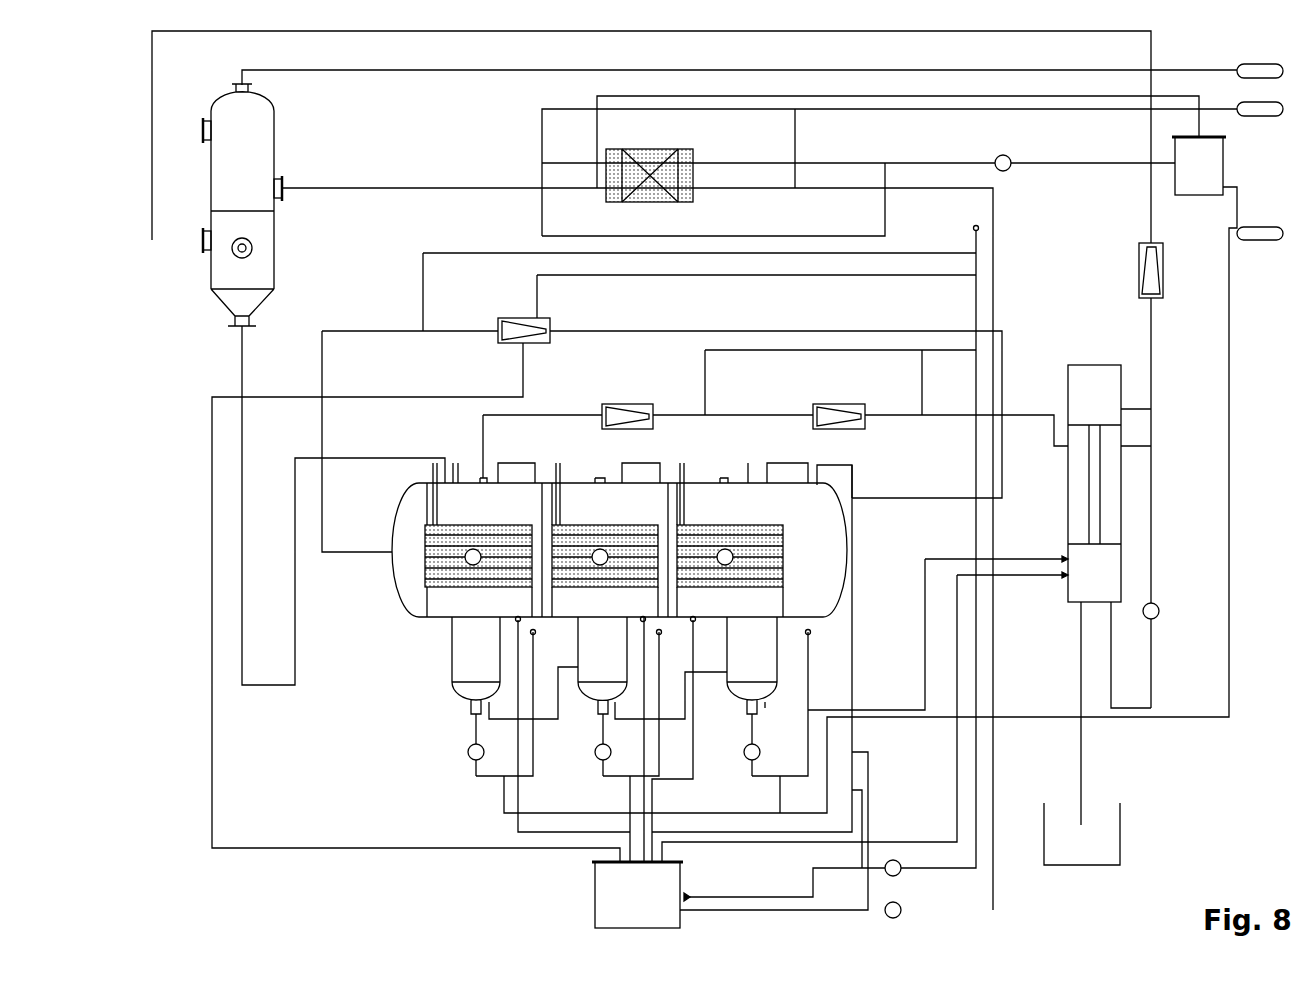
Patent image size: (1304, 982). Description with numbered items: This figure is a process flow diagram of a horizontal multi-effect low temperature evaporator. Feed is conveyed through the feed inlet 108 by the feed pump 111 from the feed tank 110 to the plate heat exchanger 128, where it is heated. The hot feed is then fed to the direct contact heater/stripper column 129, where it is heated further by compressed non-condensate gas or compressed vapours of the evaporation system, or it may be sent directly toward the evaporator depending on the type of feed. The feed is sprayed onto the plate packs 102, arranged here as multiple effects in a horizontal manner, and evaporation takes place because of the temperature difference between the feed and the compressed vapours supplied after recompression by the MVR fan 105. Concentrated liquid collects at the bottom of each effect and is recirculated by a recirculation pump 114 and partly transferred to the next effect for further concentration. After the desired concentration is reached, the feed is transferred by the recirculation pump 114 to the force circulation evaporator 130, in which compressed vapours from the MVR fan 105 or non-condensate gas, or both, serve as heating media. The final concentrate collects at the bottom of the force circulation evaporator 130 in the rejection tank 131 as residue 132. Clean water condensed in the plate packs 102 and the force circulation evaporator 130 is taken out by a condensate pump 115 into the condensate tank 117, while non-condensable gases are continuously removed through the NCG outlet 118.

The plate pack 102 is at (627, 612).
The MVR fan 105 is at (1214, 282).
The feed inlet 108 is at (1287, 219).
The feed tank 110 is at (1221, 179).
The feed pump 111 is at (1040, 197).
The recirculation pump 114 is at (464, 764).
The condensate pump 115 is at (944, 894).
The condensate tank 117 is at (659, 906).
The NCG outlet 118 is at (1287, 56).
The plate heat exchanger 128 is at (672, 230).
The direct contact heater/stripper column 129 is at (262, 187).
The force circulation evaporator 130 is at (1115, 584).
The rejection tank 131 is at (1100, 857).
The residue 132 is at (1072, 649).